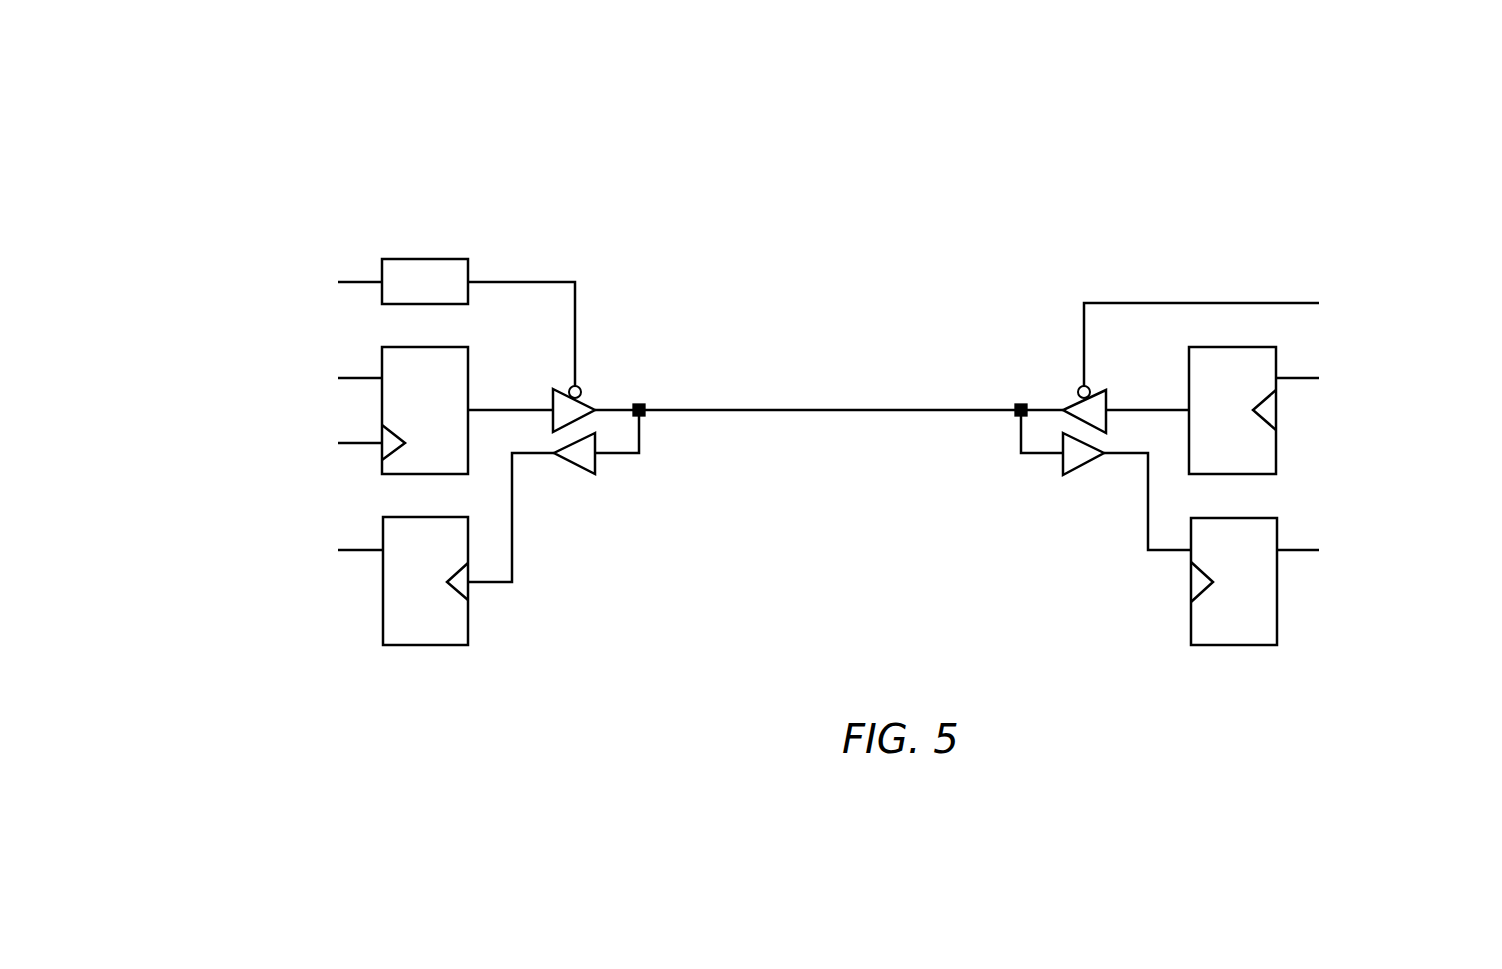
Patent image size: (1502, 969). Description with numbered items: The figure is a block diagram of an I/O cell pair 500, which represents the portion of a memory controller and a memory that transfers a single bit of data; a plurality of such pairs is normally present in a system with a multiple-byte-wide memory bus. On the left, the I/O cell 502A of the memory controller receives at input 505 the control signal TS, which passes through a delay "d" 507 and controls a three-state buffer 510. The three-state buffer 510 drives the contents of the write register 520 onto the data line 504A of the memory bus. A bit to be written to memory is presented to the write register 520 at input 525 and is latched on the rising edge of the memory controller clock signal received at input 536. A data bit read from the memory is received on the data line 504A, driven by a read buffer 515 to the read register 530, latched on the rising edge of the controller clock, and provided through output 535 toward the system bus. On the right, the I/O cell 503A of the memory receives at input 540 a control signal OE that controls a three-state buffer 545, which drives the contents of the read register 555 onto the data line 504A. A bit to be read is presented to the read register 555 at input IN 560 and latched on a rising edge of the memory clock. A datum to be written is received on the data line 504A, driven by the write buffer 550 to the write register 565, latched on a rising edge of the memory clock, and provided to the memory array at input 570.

The I/O cell pair 500 is at (1109, 122).
The I/O cell 502A is at (415, 208).
The I/O cell 503A is at (1233, 254).
The data line 504A is at (823, 392).
The input 505 is at (252, 270).
The delay 507 is at (468, 272).
The three-state buffer 510 is at (590, 388).
The input receiver buffer 515 is at (570, 463).
The write register 520 is at (468, 367).
The input 525 is at (272, 367).
The read register 530 is at (468, 607).
The output 535 is at (279, 541).
The input 536 is at (252, 436).
The input 540 is at (1393, 292).
The three-state buffer 545 is at (1075, 403).
The write buffer 550 is at (1094, 460).
The read register 555 is at (1276, 440).
The input IN 560 is at (1391, 365).
The write register 565 is at (1277, 613).
The input 570 is at (1397, 533).